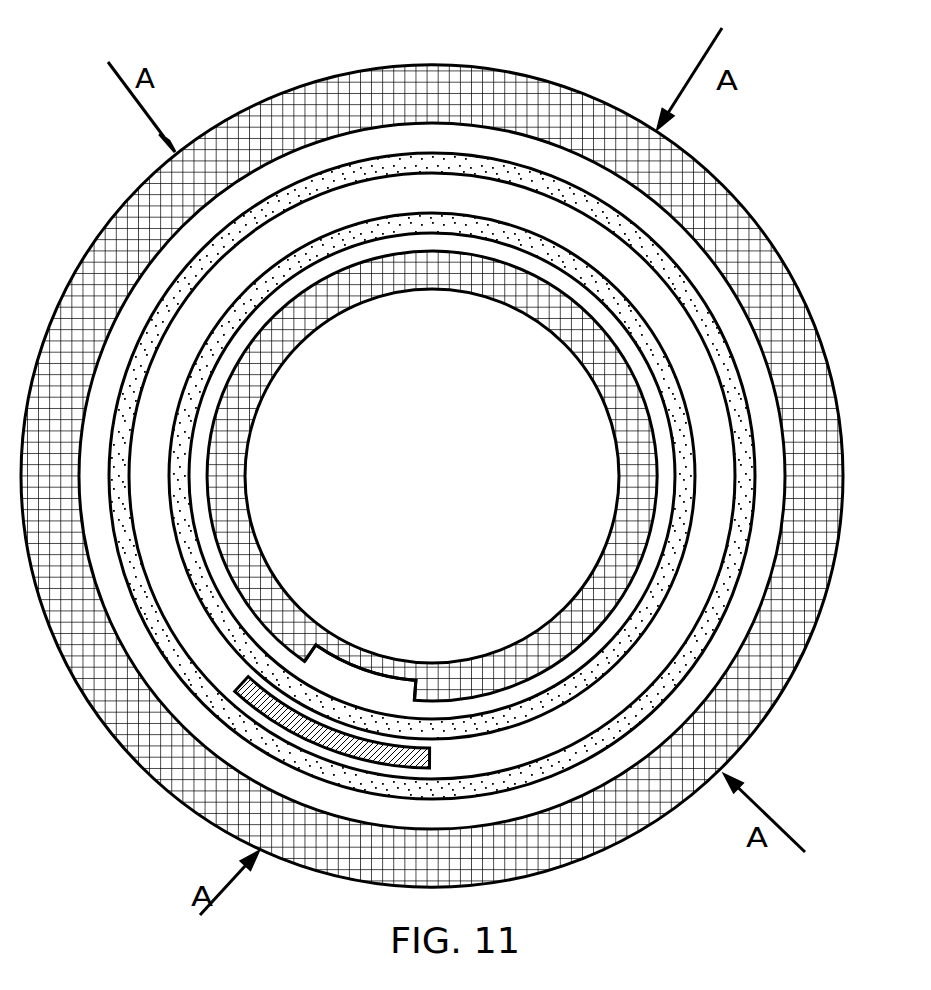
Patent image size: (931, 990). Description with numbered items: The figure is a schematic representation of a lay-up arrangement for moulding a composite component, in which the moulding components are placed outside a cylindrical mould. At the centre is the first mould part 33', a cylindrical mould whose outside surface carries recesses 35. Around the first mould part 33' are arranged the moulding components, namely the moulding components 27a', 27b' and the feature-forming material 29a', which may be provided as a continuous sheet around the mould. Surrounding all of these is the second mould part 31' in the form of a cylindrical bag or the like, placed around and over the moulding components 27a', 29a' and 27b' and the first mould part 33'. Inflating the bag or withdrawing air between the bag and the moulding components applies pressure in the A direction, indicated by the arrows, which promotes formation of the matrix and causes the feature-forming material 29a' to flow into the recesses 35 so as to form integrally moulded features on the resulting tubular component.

The second mould part 31' is at (432, 505).
The moulding component 27a' is at (485, 476).
The moulding component 27b' is at (432, 376).
The first mould part 33' is at (435, 362).
The feature-forming material 29a' is at (225, 728).
The recesses 35 is at (352, 681).